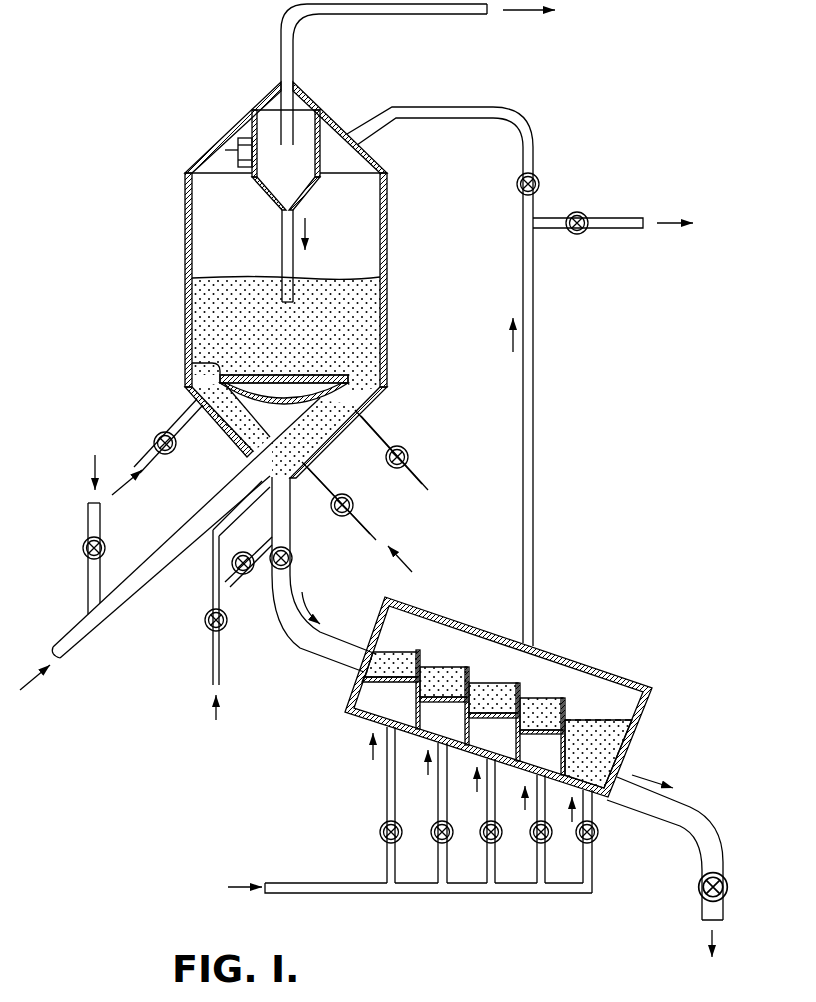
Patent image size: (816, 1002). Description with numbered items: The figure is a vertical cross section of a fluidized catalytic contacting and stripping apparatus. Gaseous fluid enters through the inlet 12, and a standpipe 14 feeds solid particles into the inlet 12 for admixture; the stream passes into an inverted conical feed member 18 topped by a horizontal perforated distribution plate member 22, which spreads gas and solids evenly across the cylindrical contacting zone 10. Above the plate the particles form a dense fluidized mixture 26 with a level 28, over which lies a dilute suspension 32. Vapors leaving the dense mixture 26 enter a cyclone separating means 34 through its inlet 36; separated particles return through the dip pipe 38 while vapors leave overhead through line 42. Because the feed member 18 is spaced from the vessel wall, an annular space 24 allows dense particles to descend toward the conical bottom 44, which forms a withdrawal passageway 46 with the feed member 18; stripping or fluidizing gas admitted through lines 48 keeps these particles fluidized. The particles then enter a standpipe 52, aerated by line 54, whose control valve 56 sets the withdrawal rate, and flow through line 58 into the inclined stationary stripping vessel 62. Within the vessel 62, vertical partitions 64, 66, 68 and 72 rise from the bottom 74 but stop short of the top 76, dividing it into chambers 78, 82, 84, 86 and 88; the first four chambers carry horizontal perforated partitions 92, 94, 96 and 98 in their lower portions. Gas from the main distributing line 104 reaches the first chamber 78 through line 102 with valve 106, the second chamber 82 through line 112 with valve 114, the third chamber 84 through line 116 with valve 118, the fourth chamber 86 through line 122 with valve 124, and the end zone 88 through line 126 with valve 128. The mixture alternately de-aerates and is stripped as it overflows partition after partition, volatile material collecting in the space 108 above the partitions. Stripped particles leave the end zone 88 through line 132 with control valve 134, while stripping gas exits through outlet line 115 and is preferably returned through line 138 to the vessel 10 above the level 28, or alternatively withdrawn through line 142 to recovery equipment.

The contacting zone 10 is at (388, 228).
The inlet 12 is at (122, 594).
The standpipe 14 is at (88, 518).
The inverted conical feed member 18 is at (380, 402).
The horizontal perforated distribution plate member 22 is at (192, 366).
The annular space 24 is at (380, 382).
The dense fluidized mixture 26 is at (366, 320).
The level 28 is at (337, 276).
The dilute suspension zone 32 is at (185, 211).
The separating means 34 is at (318, 140).
The inlet of separating means 36 is at (236, 152).
The dip pipe 38 is at (282, 234).
The overhead line 42 is at (283, 37).
The conical bottom 44 is at (322, 446).
The withdrawal passageway 46 is at (237, 436).
The lines for stripping gas 48 is at (187, 424).
The standpipe 52 is at (283, 525).
The fluidizing gas line 54 is at (268, 541).
The control valve 56 is at (295, 562).
The line 58 is at (303, 640).
The stripping vessel 62 is at (462, 626).
The first vertical partition 64 is at (425, 661).
The vertical partition 66 is at (472, 681).
The vertical partition 68 is at (525, 698).
The vertical partition 72 is at (575, 716).
The bottom of stripping vessel 74 is at (365, 725).
The top of stripping vessel 76 is at (620, 678).
The first chamber 78 is at (398, 651).
The stripping chamber 82 is at (447, 668).
The de-aeration chamber 84 is at (500, 686).
The stripping chamber 86 is at (562, 706).
The end zone 88 is at (636, 739).
The horizontal perforated partition 92 is at (398, 683).
The horizontal perforated partition 94 is at (452, 703).
The horizontal perforated partition 96 is at (500, 719).
The horizontal perforated partition 98 is at (547, 736).
The line 102 is at (386, 793).
The main distributing line 104 is at (300, 881).
The valve 106 is at (384, 838).
The space 108 is at (425, 625).
The line 112 is at (437, 793).
The valve 114 is at (435, 838).
The outlet line 115 is at (536, 538).
The line 116 is at (487, 805).
The valve 118 is at (486, 838).
The line 122 is at (537, 870).
The valve 124 is at (536, 838).
The line 126 is at (594, 852).
The valve 128 is at (584, 838).
The withdrawal line 132 is at (670, 813).
The control valve 134 is at (697, 887).
The return line 138 is at (530, 135).
The line 142 is at (620, 218).